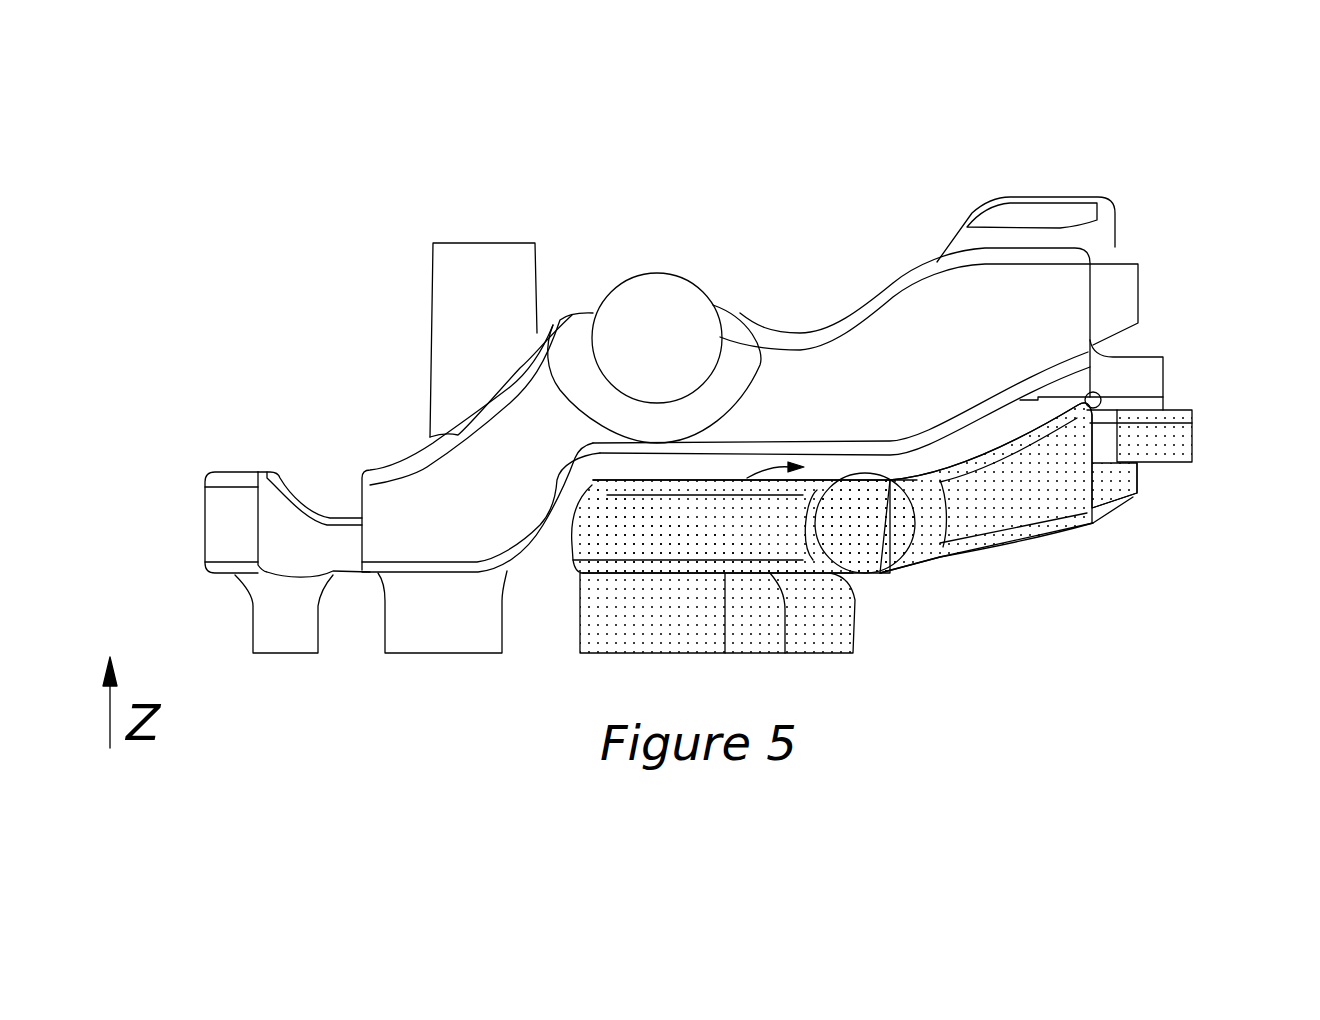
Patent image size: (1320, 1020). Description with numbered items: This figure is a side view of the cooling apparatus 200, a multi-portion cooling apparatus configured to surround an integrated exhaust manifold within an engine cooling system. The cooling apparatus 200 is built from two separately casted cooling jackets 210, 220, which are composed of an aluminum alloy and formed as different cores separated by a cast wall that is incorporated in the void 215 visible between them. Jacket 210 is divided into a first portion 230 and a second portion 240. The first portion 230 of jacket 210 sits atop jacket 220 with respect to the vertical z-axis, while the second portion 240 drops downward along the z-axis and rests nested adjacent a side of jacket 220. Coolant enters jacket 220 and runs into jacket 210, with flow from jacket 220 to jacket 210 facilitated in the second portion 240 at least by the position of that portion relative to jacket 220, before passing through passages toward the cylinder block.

The cooling apparatus 200 is at (1193, 197).
The cooling jacket 210 is at (417, 492).
The void 215 is at (803, 468).
The cooling jacket 220 is at (925, 550).
The first portion 230 is at (1193, 175).
The second portion 240 is at (585, 175).